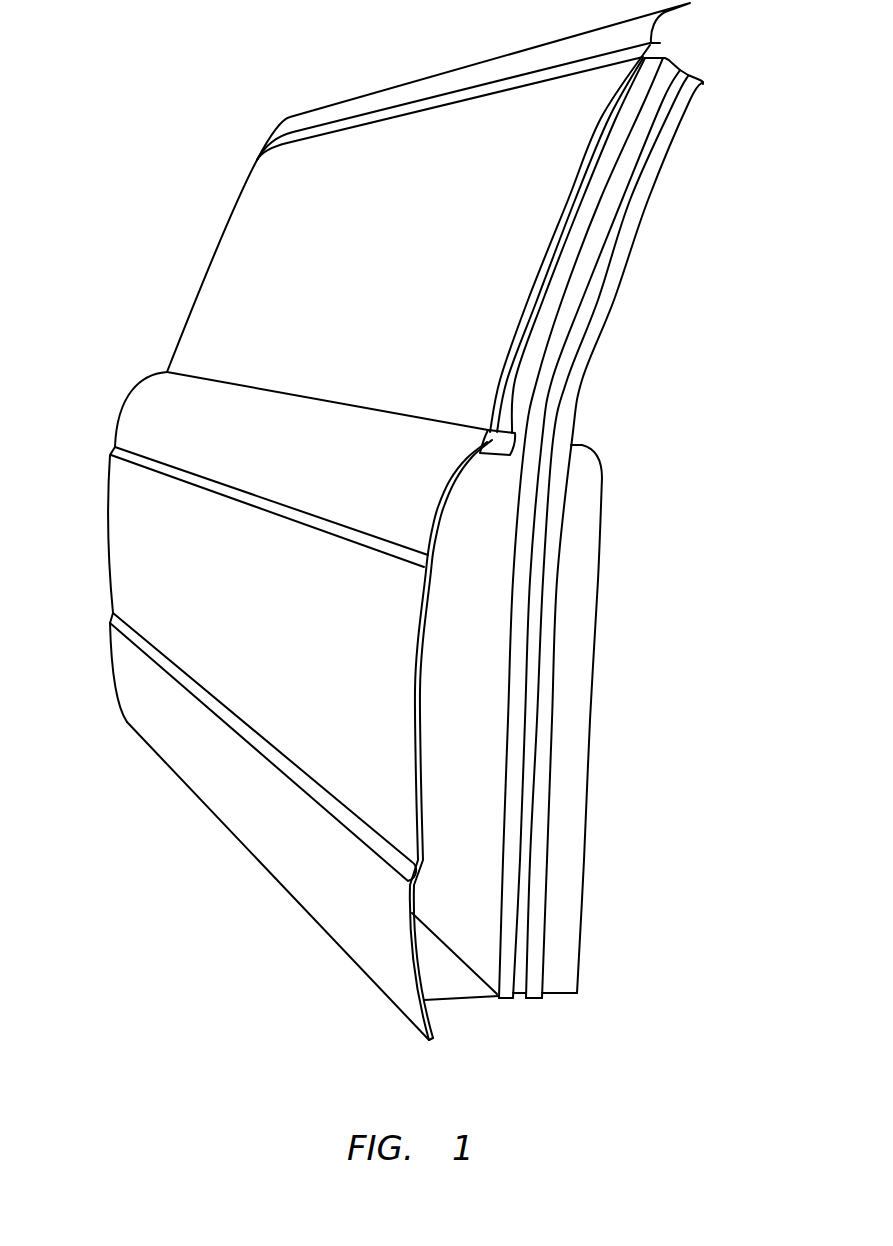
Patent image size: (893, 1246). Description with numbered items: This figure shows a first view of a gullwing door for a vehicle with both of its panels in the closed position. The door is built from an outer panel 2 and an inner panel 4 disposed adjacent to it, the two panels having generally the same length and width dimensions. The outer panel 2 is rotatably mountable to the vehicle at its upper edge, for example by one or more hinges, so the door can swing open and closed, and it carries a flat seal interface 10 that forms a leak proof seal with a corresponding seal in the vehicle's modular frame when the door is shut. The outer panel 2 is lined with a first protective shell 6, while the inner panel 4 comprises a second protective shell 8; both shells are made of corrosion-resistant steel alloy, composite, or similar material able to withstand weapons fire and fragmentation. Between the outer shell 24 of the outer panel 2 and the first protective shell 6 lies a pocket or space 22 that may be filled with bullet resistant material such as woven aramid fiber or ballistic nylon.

The outer panel 2 is at (126, 532).
The inner panel 4 is at (553, 742).
The first protective shell 6 is at (507, 916).
The second protective shell 8 is at (603, 280).
The flat seal interface 10 is at (665, 22).
The pocket or space 22 is at (482, 828).
The outer shell 24 is at (168, 592).